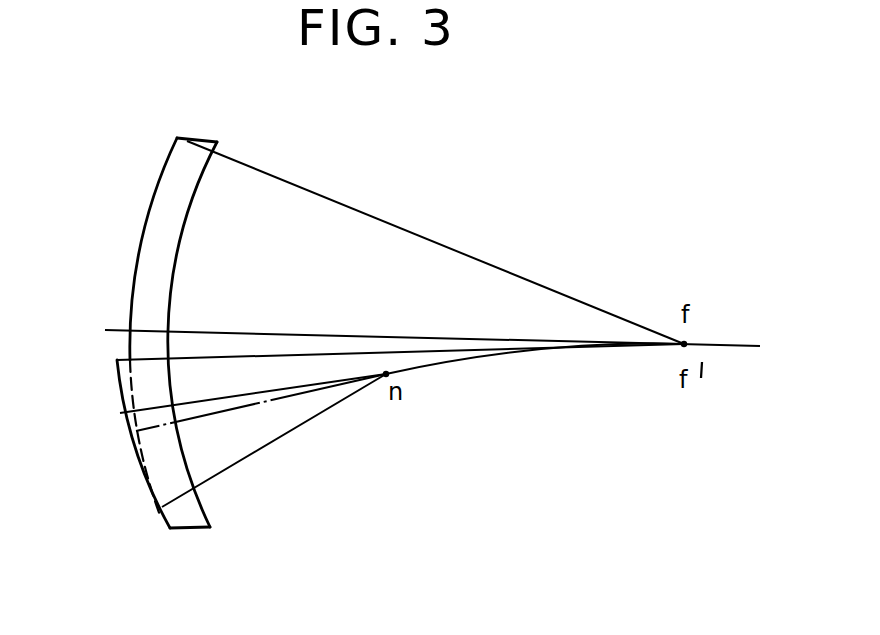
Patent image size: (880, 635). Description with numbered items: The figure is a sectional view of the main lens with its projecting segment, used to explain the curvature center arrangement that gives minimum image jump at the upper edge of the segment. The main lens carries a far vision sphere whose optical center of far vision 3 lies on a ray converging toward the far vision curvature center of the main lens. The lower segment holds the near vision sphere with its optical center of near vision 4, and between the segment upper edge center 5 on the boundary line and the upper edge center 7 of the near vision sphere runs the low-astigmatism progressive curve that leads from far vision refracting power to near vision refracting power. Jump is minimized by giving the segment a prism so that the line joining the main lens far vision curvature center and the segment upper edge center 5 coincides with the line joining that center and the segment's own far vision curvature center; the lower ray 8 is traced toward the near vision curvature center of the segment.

The optical center of far vision 3 is at (132, 331).
The optical center of near vision 4 is at (129, 433).
The segment upper edge center 5 is at (118, 360).
The upper edge center of the near vision sphere 7 is at (120, 413).
The lower marginal ray 8 is at (162, 508).